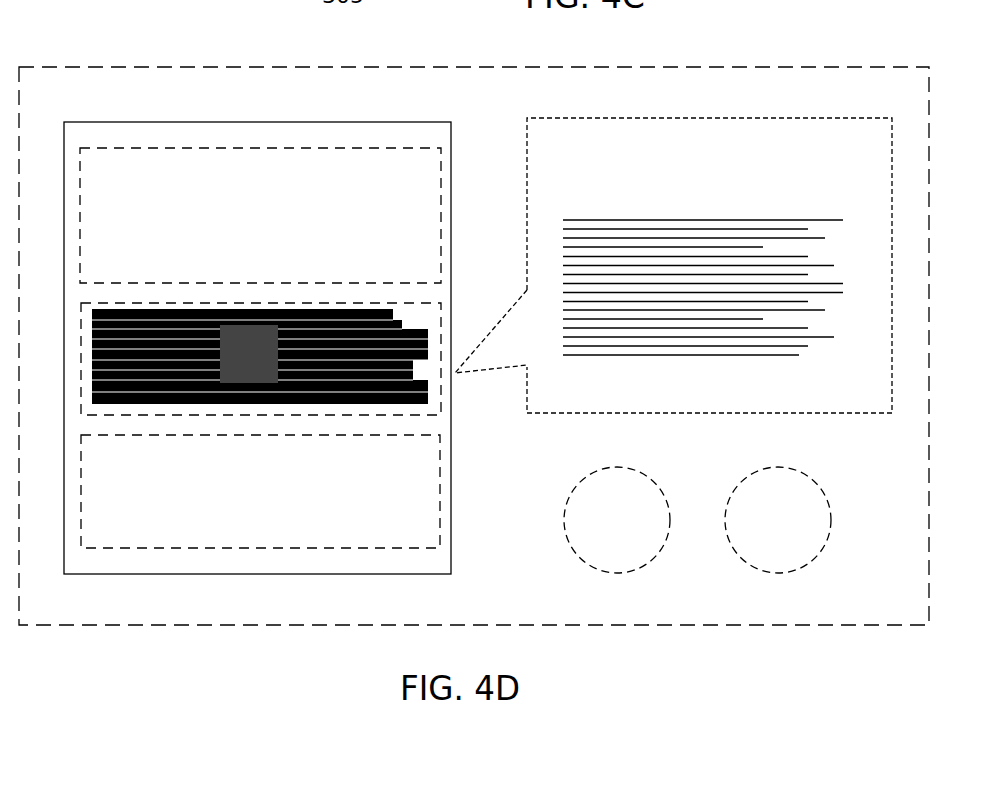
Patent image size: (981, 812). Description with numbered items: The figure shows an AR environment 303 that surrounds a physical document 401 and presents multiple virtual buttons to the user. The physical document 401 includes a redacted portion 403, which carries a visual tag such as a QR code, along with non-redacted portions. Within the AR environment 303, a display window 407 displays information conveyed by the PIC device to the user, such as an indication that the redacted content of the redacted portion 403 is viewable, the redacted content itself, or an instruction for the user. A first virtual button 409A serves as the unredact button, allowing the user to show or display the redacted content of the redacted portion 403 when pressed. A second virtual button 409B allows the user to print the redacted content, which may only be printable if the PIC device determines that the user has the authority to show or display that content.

The AR environment 303 is at (277, 67).
The physical document 401 is at (452, 535).
The redacted portion 403 is at (440, 392).
The display window 407 is at (824, 414).
The first virtual button 409A is at (643, 563).
The second virtual button 409B is at (800, 563).